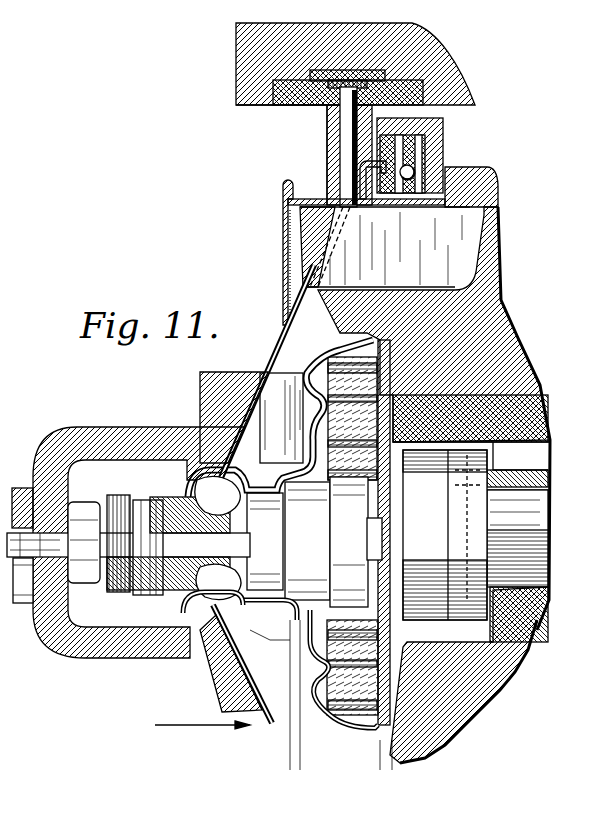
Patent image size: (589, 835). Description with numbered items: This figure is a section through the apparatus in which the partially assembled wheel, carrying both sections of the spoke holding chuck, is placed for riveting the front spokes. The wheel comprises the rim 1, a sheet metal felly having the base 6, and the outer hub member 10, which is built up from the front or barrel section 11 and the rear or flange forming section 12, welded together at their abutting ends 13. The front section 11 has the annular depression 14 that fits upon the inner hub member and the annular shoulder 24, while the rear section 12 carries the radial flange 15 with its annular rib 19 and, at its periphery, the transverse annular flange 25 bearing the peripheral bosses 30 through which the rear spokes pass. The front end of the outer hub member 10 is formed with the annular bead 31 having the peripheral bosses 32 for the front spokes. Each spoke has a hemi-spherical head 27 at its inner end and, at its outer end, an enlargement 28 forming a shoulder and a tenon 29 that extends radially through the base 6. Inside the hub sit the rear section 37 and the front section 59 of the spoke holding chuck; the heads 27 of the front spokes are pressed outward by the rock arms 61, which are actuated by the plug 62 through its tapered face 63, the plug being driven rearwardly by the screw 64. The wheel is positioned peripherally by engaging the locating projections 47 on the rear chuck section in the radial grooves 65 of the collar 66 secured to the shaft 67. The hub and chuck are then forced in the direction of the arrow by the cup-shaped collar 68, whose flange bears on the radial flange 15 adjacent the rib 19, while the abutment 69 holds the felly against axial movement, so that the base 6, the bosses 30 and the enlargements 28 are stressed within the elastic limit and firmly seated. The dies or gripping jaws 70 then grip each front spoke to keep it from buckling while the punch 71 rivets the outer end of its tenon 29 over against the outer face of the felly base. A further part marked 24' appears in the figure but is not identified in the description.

The rim 1 is at (283, 187).
The base of the felly 6 is at (283, 230).
The outer hub member 10 is at (200, 460).
The front or barrel section 11 is at (268, 492).
The rear or flange forming section 12 is at (305, 628).
The welded abutting ends 13 is at (292, 628).
The annular depression 14 is at (379, 536).
The radial flange 15 is at (235, 380).
The annular rib 19 is at (278, 372).
The annular shoulder 24 is at (280, 418).
The hub cylinder 24' is at (355, 542).
The transverse annular flange 25 is at (272, 725).
The hemi-spherical heads 27 is at (222, 478).
The enlargements 28 is at (370, 212).
The tenons 29 is at (340, 206).
The peripheral bosses 30 is at (352, 730).
The annular bead 31 is at (195, 630).
The peripheral bosses 32 is at (150, 658).
The rear section of spoke holding chuck 37 is at (432, 532).
The locating projections 47 is at (530, 405).
The front section of spoke holding chuck 59 is at (120, 500).
The rock arms 61 is at (175, 455).
The plug 62 is at (190, 572).
The tapered face 63 is at (110, 435).
The screw 64 is at (175, 497).
The radial grooves 65 is at (540, 450).
The collar 66 is at (480, 600).
The shaft 67 is at (520, 520).
The cup-shaped collar 68 is at (65, 432).
The abutment 69 is at (410, 208).
The dies or gripping jaws 70 is at (425, 398).
The punch 71 is at (355, 180).